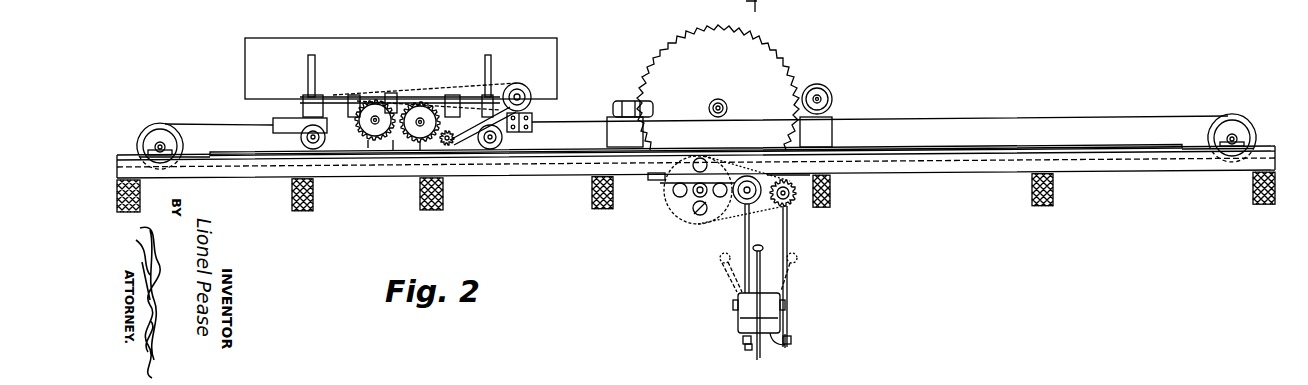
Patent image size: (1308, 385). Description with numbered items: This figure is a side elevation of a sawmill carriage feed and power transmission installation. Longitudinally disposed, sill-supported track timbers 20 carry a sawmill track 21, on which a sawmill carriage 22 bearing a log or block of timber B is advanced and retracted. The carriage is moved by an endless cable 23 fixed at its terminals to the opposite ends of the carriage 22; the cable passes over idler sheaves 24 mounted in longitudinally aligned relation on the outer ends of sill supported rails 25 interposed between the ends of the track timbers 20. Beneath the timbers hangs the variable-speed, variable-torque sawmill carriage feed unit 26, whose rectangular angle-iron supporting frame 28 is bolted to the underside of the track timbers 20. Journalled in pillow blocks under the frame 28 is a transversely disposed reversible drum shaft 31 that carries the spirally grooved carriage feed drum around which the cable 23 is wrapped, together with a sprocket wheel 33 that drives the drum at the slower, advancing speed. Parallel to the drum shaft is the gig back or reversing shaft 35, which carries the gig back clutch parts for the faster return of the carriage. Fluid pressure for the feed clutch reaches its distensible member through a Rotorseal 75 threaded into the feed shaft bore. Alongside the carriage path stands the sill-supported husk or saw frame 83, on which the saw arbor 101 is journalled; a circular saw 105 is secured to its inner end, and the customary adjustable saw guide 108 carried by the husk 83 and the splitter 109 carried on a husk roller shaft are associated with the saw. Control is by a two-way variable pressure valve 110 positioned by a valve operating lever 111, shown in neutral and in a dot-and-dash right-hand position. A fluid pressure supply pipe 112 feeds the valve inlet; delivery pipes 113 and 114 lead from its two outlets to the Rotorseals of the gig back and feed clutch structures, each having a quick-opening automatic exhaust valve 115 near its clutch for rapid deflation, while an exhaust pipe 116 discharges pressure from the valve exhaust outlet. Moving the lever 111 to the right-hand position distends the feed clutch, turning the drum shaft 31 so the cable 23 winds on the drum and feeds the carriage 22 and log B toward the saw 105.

The track timbers 20 is at (925, 170).
The sawmill track 21 is at (982, 145).
The sawmill carriage 22 is at (288, 127).
The endless cable 23 is at (1097, 118).
The idler sheaves 24 is at (158, 132).
The sill supported rails 25 is at (193, 157).
The sawmill carriage feed unit 26 is at (767, 215).
The supporting frame 28 is at (662, 178).
The drum shaft 31 is at (700, 202).
The sprocket wheel 33 is at (683, 205).
The gig back shaft 35 is at (740, 200).
The Rotorseal 75 is at (797, 205).
The husk or saw frame 83 is at (824, 133).
The saw arbor 101 is at (724, 103).
The circular saw 105 is at (782, 58).
The saw guide 108 is at (638, 100).
The splitter 109 is at (822, 94).
The variable pressure valve 110 is at (740, 0).
The valve operating lever 111 is at (722, 262).
The fluid pressure supply pipe 112 is at (758, 8).
The fluid pressure delivery pipe 113 is at (748, 347).
The fluid pressure delivery pipe 114 is at (788, 318).
The quick-opening automatic exhaust valve 115 is at (742, 340).
The fluid pressure exhaust pipe 116 is at (760, 355).
The log or block of timber B is at (342, 57).